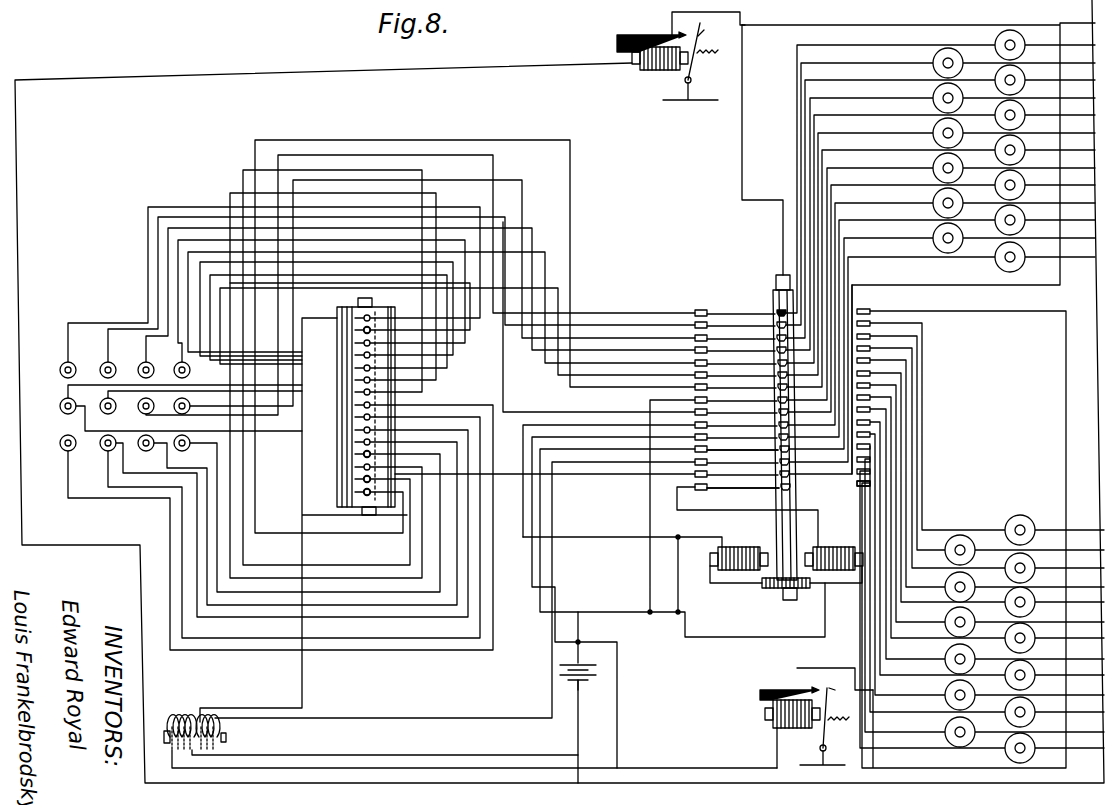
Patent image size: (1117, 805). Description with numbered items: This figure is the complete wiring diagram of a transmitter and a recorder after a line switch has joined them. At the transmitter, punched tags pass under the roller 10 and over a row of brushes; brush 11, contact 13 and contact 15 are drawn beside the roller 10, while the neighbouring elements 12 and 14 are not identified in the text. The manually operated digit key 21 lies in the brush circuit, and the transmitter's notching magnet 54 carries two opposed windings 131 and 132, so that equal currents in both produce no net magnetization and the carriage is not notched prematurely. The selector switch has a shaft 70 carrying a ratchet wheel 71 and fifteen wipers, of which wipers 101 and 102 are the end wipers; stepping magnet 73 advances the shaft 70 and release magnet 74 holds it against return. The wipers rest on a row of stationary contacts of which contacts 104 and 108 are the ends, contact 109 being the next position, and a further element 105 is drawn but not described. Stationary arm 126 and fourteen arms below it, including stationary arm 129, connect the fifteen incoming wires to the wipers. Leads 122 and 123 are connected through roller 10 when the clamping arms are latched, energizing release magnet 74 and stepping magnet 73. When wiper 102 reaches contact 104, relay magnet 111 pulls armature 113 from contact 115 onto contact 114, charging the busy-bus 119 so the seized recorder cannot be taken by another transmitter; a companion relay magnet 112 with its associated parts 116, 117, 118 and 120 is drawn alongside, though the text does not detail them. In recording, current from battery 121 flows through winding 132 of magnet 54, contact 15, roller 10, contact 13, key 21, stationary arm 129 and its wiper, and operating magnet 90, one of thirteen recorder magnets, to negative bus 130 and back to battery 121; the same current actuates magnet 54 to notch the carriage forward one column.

The roller 10 is at (340, 394).
The brush 11 is at (371, 310).
The commutator contact 12 is at (355, 334).
The contact 13 is at (355, 455).
The commutator contact 14 is at (355, 480).
The contact 15 is at (355, 494).
The manually-operated transmitter key 21 is at (144, 446).
The stepping magnet 54 is at (205, 724).
The shaft 70 is at (800, 507).
The ratchet wheel 71 is at (768, 590).
The stepping magnet 73 is at (838, 546).
The release magnet 74 is at (740, 546).
The operating magnet 90 is at (1022, 218).
The wiper 101 is at (792, 490).
The wiper 102 is at (776, 314).
The stationary contact 104 is at (778, 296).
The right hand contacts 105 is at (980, 528).
The stationary contact 108 is at (772, 486).
The stationary contact 109 is at (868, 489).
The relay magnet 111 is at (666, 70).
The relay magnet 112 is at (796, 728).
The armature 113 is at (692, 80).
The contact 114 is at (655, 33).
The contact 115 is at (708, 23).
The relay armature 116 is at (828, 722).
The relay contact 117 is at (792, 686).
The relay contact 118 is at (835, 679).
The busy-bus 119 is at (686, 99).
The ground 120 is at (840, 764).
The battery 121 is at (565, 666).
The lead 122 is at (312, 310).
The lead 123 is at (400, 497).
The stationary arm 126 is at (702, 312).
The stationary arm 129 is at (742, 447).
The negative bus 130 is at (1097, 404).
The winding 131 is at (206, 726).
The winding 132 is at (174, 726).